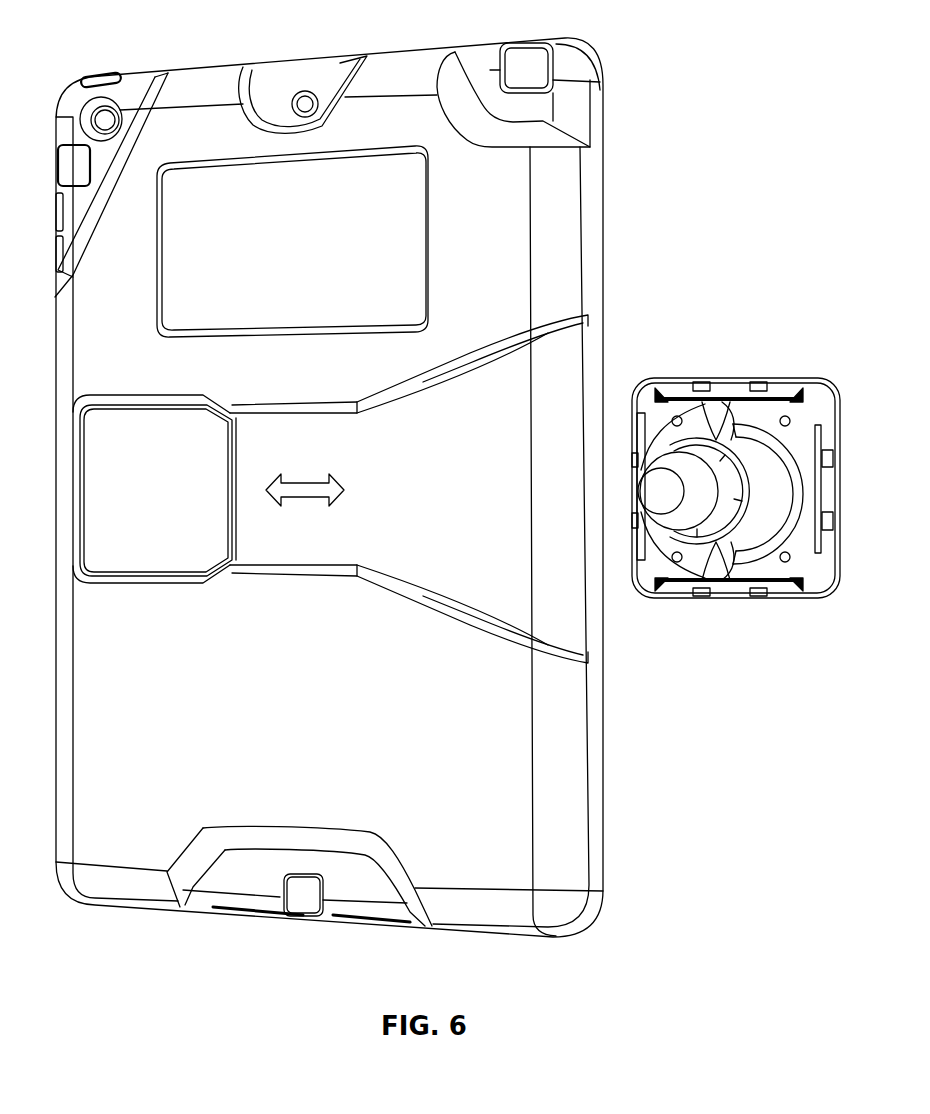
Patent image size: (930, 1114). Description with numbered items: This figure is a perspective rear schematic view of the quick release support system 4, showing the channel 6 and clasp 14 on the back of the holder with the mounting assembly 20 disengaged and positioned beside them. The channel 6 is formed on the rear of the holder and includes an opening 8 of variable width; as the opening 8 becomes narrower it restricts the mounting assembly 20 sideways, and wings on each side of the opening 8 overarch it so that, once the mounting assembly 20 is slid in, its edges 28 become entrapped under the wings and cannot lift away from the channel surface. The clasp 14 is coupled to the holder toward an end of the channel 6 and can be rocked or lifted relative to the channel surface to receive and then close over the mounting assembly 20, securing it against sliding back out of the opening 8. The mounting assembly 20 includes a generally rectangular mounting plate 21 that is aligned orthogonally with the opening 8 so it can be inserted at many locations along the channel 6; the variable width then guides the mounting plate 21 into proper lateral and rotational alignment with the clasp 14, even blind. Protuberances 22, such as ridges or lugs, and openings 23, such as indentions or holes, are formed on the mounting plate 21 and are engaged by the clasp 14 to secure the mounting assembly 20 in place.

The quick release support system 4 is at (603, 296).
The channel 6 is at (540, 408).
The opening 8 is at (548, 334).
The clasp 14 is at (103, 488).
The mounting assembly 20 is at (807, 597).
The mounting plate 21 is at (683, 597).
The protuberances 22 is at (640, 537).
The openings 23 is at (632, 522).
The edges 28 is at (733, 378).